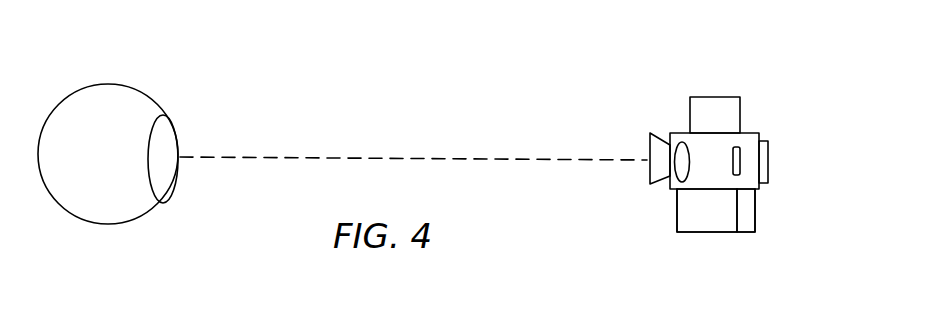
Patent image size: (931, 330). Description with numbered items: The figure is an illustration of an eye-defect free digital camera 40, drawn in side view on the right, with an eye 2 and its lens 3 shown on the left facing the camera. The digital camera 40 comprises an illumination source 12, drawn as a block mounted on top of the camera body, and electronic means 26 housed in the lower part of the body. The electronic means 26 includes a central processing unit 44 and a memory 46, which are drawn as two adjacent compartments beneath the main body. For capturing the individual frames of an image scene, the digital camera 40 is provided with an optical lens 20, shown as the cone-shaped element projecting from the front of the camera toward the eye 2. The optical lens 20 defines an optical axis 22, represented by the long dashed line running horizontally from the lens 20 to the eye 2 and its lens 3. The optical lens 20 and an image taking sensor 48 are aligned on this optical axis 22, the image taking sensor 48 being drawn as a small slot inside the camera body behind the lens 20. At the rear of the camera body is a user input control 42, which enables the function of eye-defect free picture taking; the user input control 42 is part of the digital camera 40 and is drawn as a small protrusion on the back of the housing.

The eye 2 is at (118, 215).
The cornea / lens of eye 3 is at (167, 122).
The illumination source 12 is at (718, 105).
The optical lens 20 is at (683, 168).
The optical axis 22 is at (432, 160).
The electronic means 26 is at (663, 229).
The digital camera 40 is at (778, 222).
The user input control 42 is at (768, 162).
The central processing unit 44 is at (743, 235).
The memory 46 is at (697, 223).
The image taking sensor 48 is at (738, 146).